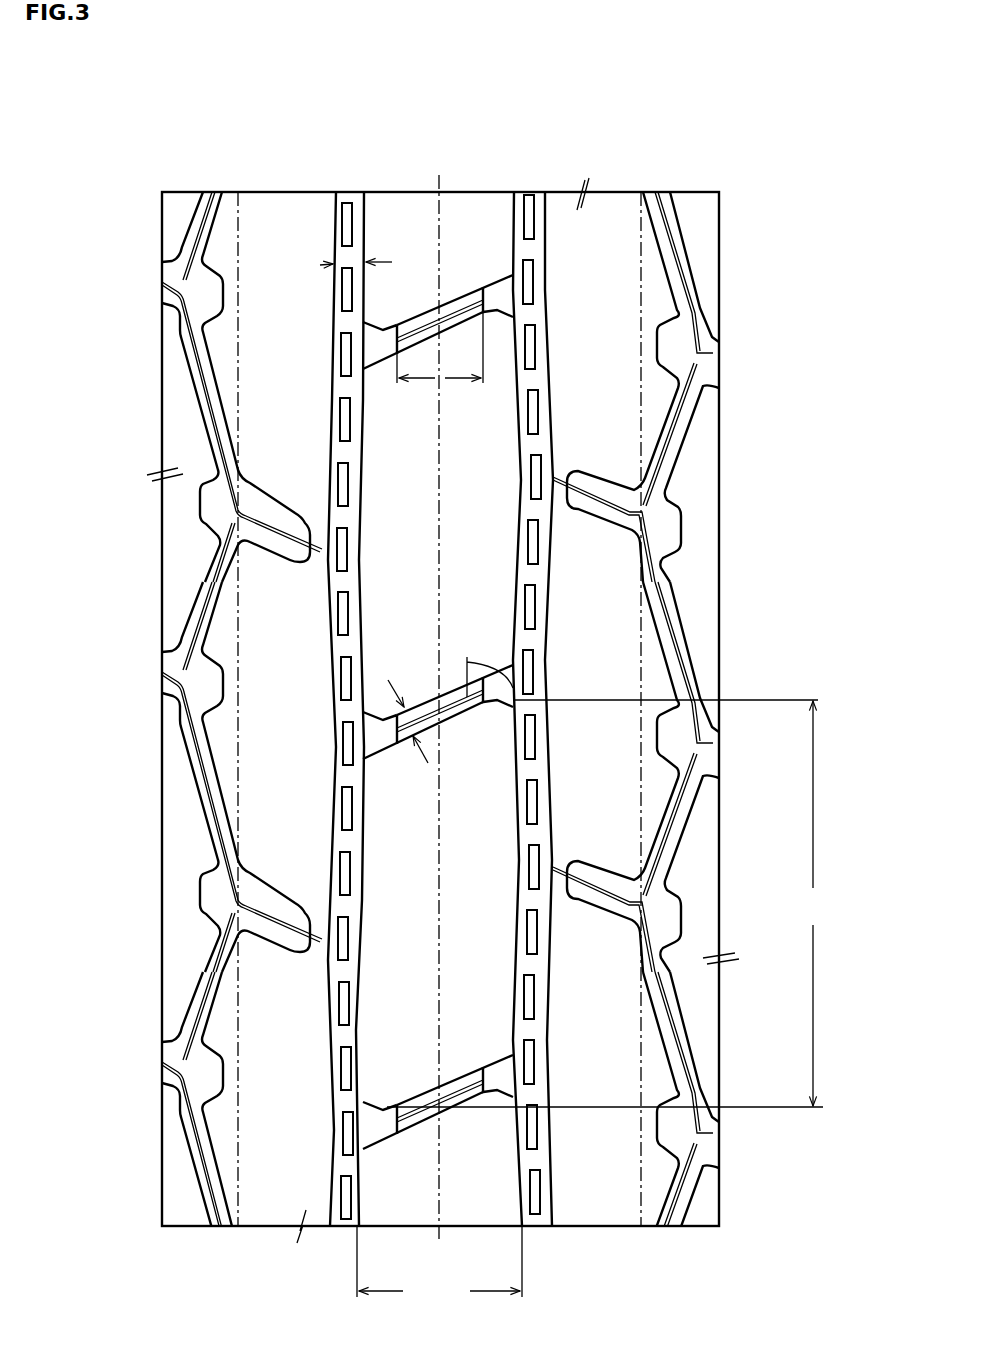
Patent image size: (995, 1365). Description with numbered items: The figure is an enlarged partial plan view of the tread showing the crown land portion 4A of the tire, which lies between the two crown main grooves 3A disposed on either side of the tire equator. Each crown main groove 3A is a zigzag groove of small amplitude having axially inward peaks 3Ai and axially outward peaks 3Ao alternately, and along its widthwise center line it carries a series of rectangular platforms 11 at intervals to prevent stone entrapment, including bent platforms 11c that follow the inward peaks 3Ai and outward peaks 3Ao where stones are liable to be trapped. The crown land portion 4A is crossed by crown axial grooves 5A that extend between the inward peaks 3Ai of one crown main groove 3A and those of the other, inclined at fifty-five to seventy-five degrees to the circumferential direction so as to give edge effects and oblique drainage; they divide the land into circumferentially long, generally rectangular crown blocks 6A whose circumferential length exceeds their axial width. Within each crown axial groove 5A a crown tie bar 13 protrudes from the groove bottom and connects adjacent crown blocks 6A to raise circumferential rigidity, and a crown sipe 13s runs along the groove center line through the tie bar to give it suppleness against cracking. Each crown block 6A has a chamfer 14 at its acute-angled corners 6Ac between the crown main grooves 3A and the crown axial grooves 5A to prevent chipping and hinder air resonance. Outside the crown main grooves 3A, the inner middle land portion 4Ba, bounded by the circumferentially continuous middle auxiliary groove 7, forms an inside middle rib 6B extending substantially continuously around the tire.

The crown main groove 3A is at (338, 222).
The axially inward peak 3Ai is at (549, 288).
The axially outward peak 3Ao is at (557, 470).
The crown land portion 4A is at (407, 1156).
The inner middle land portion 4Ba is at (268, 216).
The inside middle rib 6B is at (416, 722).
The crown axial groove 5A is at (493, 298).
The crown block 6A is at (421, 525).
The acute-angled corner 6Ac is at (498, 313).
The chamfer 14 is at (469, 710).
The middle auxiliary groove 7 is at (214, 955).
The platform 11 is at (541, 268).
The bent platform 11c is at (694, 777).
The crown tie bar 13 is at (413, 322).
The crown sipe 13s is at (470, 304).